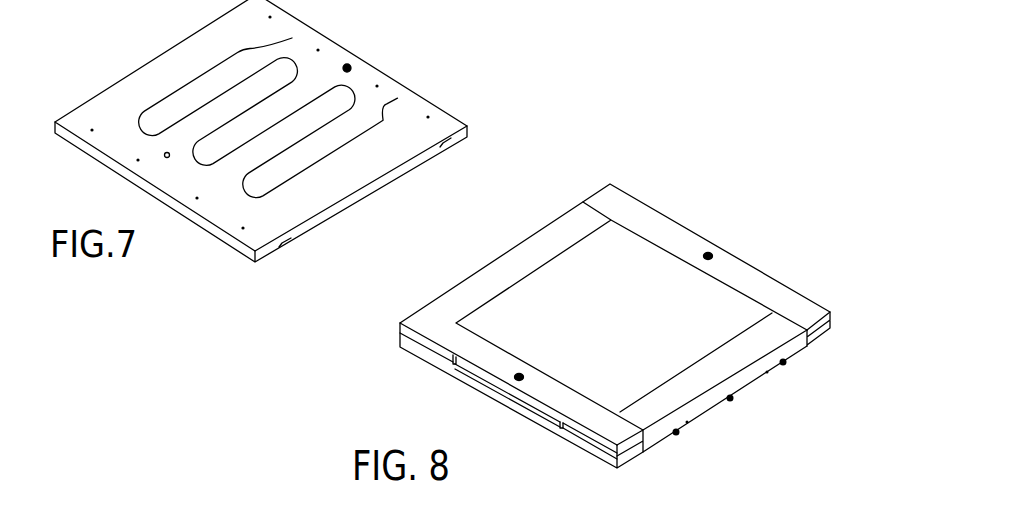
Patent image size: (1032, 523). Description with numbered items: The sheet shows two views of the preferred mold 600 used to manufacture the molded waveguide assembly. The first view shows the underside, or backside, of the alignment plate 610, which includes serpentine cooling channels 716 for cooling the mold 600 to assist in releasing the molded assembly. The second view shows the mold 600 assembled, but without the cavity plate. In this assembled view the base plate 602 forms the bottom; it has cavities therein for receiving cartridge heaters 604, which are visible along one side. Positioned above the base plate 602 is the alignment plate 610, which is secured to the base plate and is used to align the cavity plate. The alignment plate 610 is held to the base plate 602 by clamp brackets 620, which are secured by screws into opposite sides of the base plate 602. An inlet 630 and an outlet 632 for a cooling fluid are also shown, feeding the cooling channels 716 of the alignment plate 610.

In FIG. 8, the mold 600 is at (743, 177).
In FIG. 8, the base plate 602 is at (586, 447).
In FIG. 8, the cartridge heaters 604 is at (678, 438).
In FIG. 7, the alignment plate 610 is at (420, 90).
In FIG. 8, the alignment plate 610 is at (750, 268).
In FIG. 8, the clamp brackets 620 is at (458, 281).
In FIG. 8, the inlet 630 is at (558, 426).
In FIG. 8, the outlet 632 is at (452, 362).
In FIG. 7, the cooling channels 716 is at (386, 112).